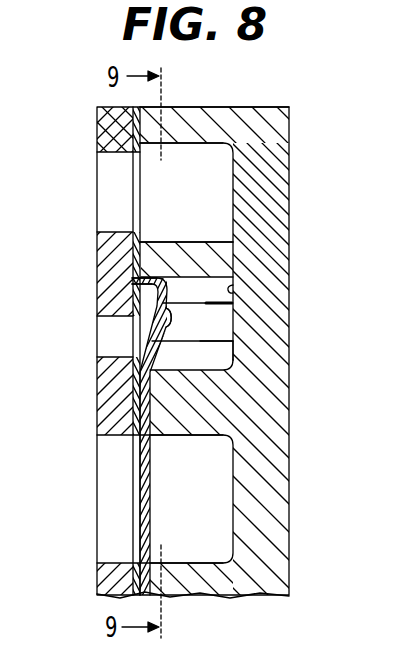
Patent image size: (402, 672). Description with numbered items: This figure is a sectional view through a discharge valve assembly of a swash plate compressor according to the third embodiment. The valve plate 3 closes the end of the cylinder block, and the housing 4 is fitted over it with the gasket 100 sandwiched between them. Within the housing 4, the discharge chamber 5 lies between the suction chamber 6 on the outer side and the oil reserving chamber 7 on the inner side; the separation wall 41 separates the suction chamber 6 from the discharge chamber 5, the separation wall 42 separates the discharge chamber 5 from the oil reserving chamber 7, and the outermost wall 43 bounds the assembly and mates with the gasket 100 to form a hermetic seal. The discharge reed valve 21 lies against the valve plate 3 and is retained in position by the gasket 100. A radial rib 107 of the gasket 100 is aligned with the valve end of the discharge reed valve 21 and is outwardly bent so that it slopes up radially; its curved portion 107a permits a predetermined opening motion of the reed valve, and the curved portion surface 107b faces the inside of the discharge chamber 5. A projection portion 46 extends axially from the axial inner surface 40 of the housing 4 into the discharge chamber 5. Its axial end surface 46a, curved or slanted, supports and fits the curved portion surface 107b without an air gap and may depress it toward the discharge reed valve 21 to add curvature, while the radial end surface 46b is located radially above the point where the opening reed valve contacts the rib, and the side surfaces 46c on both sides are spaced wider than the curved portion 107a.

The valve plate 3 is at (105, 135).
The housing 4 is at (290, 118).
The discharge chamber 5 is at (197, 371).
The suction chamber 6 is at (220, 175).
The oil reserving chamber 7 is at (217, 512).
The discharge reed valve 21 is at (132, 342).
The axial inner surface 40 is at (232, 289).
The separation wall 41 is at (190, 246).
The separation wall 42 is at (210, 420).
The outermost wall 43 is at (230, 120).
The projection portion 46 is at (193, 303).
The axial end surface 46a is at (187, 375).
The radial end surface 46b is at (208, 325).
The side surface 46c is at (225, 358).
The gasket 100 is at (130, 118).
The radial rib 107 is at (98, 403).
The curved portion 107a is at (145, 287).
The curved portion surface 107b is at (153, 307).